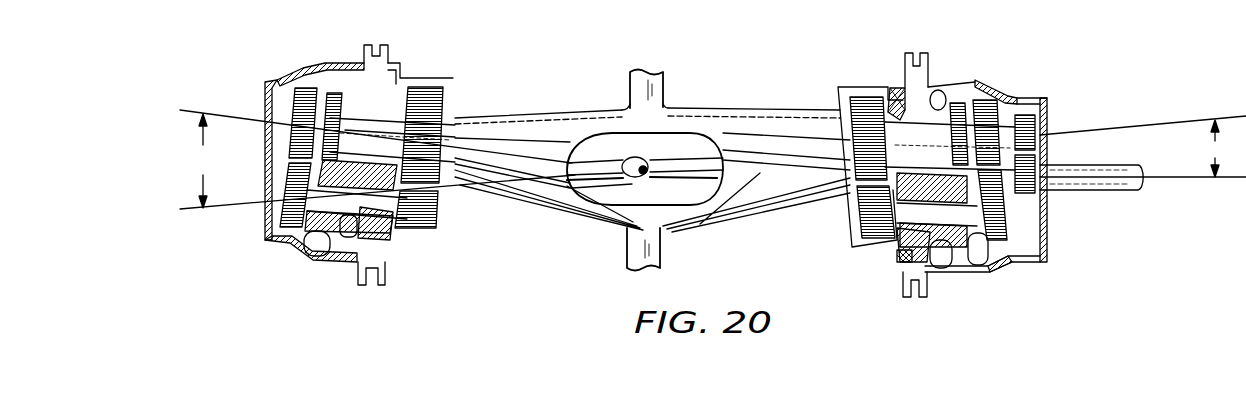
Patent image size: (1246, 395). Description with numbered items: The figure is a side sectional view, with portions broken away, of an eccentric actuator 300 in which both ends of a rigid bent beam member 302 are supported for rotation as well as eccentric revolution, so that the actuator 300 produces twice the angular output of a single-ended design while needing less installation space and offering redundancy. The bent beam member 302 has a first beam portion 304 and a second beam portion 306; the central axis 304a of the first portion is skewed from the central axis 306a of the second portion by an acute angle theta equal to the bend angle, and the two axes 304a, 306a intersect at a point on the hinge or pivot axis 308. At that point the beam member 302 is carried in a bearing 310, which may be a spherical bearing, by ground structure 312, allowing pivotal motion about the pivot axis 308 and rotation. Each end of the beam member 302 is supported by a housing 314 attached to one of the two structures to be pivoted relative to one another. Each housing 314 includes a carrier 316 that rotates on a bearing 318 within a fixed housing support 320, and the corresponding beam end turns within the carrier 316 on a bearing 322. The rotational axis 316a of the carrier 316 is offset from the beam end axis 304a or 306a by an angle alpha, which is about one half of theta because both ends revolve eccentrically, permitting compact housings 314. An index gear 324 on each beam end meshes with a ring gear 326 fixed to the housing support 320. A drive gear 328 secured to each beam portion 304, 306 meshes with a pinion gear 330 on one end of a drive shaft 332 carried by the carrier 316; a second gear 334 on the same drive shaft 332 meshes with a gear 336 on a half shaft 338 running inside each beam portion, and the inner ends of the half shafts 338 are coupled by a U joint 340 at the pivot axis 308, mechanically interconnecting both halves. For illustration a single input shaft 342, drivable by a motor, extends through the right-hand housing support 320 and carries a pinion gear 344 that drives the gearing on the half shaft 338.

The eccentric actuator 300 is at (766, 58).
The bent beam member 302 is at (742, 109).
The first beam portion 304 is at (533, 200).
The central axis of first beam portion 304a is at (226, 110).
The second beam portion 306 is at (737, 210).
The central axis of second beam portion 306a is at (1163, 120).
The pivot axis 308 is at (650, 176).
The bearing 310 is at (627, 223).
The ground structure 312 is at (632, 78).
The housing 314 is at (340, 48).
The carrier 316 is at (372, 243).
The rotational axis of carrier 316a is at (1208, 180).
The bearing 318 is at (899, 257).
The housing support 320 is at (1003, 82).
The bearing 322 is at (907, 92).
The index gear 324 is at (316, 97).
The ring gear 326 is at (973, 243).
The drive gear 328 is at (428, 130).
The pinion gear 330 is at (435, 218).
The drive shaft 332 is at (327, 236).
The second gear 334 is at (262, 225).
The gear 336 is at (318, 68).
The half shaft 338 is at (600, 160).
The U joint 340 is at (620, 178).
The input shaft 342 is at (1117, 188).
The pinion gear 344 is at (1032, 187).